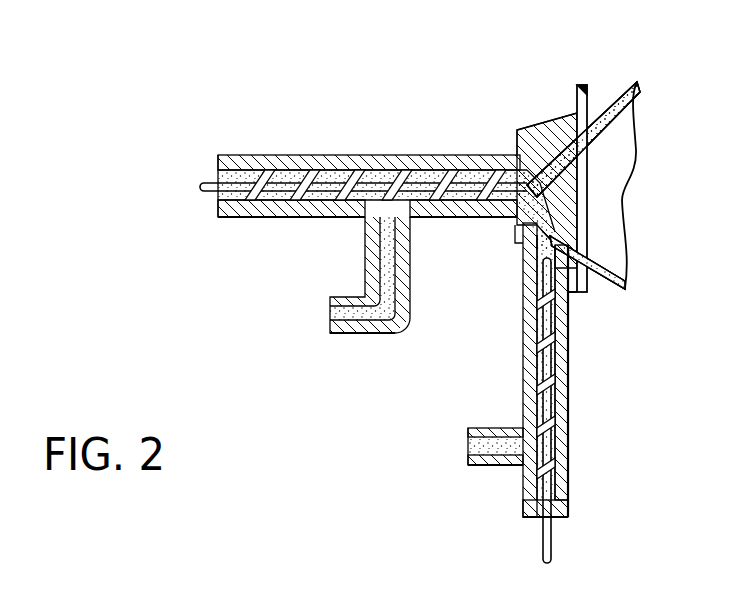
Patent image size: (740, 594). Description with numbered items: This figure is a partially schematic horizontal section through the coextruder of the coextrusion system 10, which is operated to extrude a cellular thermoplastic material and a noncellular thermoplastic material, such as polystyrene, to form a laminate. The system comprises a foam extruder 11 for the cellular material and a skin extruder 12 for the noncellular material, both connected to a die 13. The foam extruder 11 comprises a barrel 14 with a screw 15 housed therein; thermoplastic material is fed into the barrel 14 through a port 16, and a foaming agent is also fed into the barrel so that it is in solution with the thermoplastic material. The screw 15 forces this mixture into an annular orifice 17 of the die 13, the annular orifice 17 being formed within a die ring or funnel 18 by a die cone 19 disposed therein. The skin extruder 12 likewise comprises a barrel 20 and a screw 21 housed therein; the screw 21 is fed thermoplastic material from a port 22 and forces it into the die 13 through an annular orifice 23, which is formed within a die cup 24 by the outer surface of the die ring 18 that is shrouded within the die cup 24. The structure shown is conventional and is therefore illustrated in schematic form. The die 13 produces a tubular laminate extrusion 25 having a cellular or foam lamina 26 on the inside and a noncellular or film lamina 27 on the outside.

The coextrusion system 10 is at (220, 100).
The foam extruder 11 is at (283, 133).
The skin extruder 12 is at (582, 362).
The die 13 is at (544, 85).
The barrel 14 is at (350, 152).
The screw 15 is at (264, 198).
The port 16 is at (330, 298).
The annular orifice 17 is at (510, 155).
The die ring or funnel 18 is at (535, 258).
The die cone 19 is at (545, 213).
The barrel 20 is at (560, 400).
The screw 21 is at (550, 440).
The port 22 is at (487, 427).
The annular orifice 23 is at (557, 125).
The die cup 24 is at (545, 125).
The tubular laminate extrusion 25 is at (603, 190).
The foam lamina 26 is at (612, 110).
The film lamina 27 is at (620, 88).